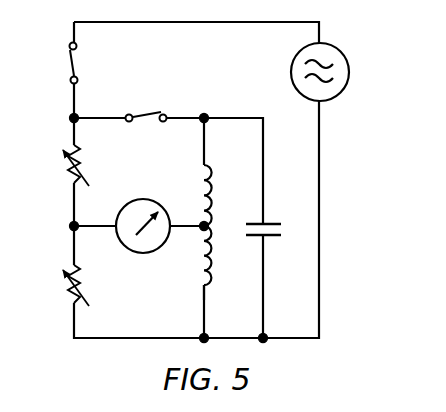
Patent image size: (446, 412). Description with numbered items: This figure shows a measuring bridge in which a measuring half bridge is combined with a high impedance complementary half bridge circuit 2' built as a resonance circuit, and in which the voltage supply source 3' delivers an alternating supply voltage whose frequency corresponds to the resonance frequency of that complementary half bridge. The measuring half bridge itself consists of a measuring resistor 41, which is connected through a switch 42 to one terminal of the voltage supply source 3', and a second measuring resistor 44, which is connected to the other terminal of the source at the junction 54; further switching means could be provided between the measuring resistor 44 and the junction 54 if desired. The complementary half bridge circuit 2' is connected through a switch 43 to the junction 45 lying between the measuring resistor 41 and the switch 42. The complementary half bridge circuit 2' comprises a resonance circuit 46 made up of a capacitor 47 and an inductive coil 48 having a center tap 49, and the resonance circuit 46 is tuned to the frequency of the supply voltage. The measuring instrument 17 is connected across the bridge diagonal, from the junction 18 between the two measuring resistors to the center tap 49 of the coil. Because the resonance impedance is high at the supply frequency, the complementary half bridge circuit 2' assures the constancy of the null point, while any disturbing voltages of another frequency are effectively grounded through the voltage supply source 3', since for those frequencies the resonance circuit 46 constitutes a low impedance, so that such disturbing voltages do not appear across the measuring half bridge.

The complementary half bridge circuit 2' is at (227, 94).
The voltage supply source 3' is at (332, 66).
The measuring instrument 17 is at (141, 199).
The junction 18 is at (72, 225).
The measuring resistor 41 is at (67, 170).
The switch 42 is at (70, 57).
The switch 43 is at (144, 113).
The measuring resistor 44 is at (68, 288).
The junction 45 is at (72, 116).
The resonance circuit 46 is at (248, 168).
The capacitor 47 is at (268, 222).
The inductive coil 48 is at (209, 264).
The center tap 49 is at (200, 231).
The junction 54 is at (200, 336).